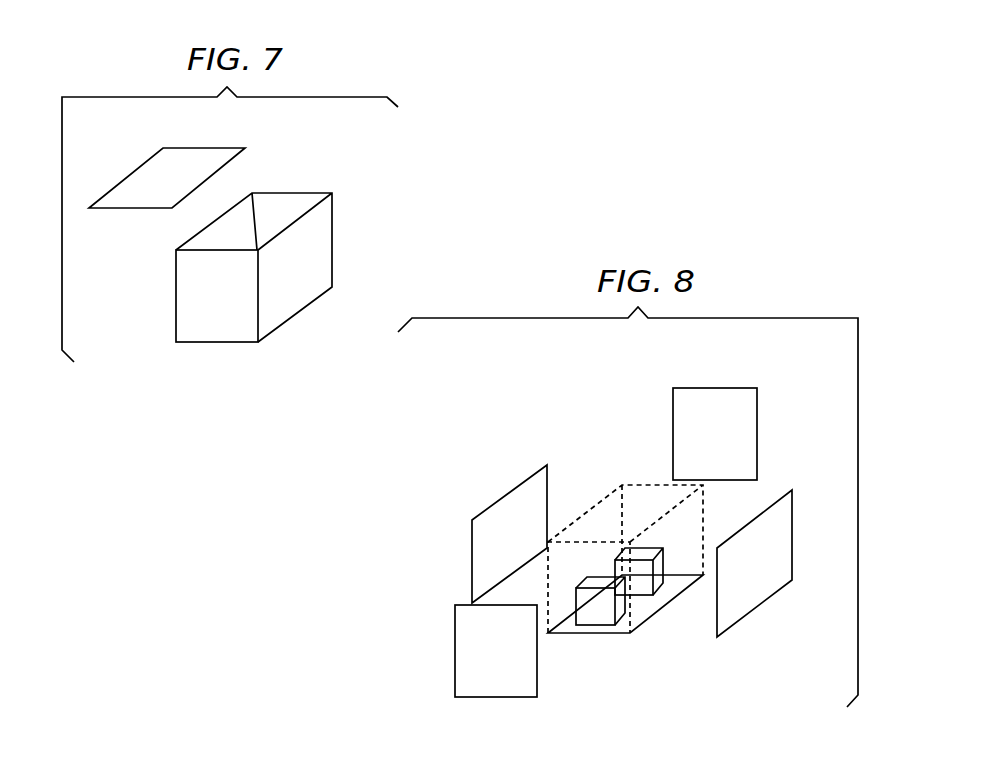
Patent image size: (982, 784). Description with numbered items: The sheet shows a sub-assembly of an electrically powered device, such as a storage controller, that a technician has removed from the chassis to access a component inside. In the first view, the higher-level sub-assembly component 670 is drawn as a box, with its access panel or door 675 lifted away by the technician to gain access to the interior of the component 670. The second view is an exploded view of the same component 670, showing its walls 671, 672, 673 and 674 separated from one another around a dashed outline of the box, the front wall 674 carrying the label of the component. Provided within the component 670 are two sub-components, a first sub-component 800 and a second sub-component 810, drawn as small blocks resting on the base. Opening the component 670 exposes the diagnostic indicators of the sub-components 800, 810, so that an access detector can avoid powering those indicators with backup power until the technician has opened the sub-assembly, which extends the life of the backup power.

In FIG. 7, the component D2 670 is at (333, 248).
In FIG. 8, the component D2 670 is at (647, 620).
In FIG. 7, the access panel or door 675 is at (228, 148).
In FIG. 8, the wall 671 is at (521, 483).
In FIG. 8, the wall 672 is at (715, 388).
In FIG. 8, the wall 673 is at (794, 528).
In FIG. 8, the wall 674 is at (455, 630).
In FIG. 8, the sub-component D2-0 800 is at (592, 625).
In FIG. 8, the sub-component D2-1 810 is at (644, 556).